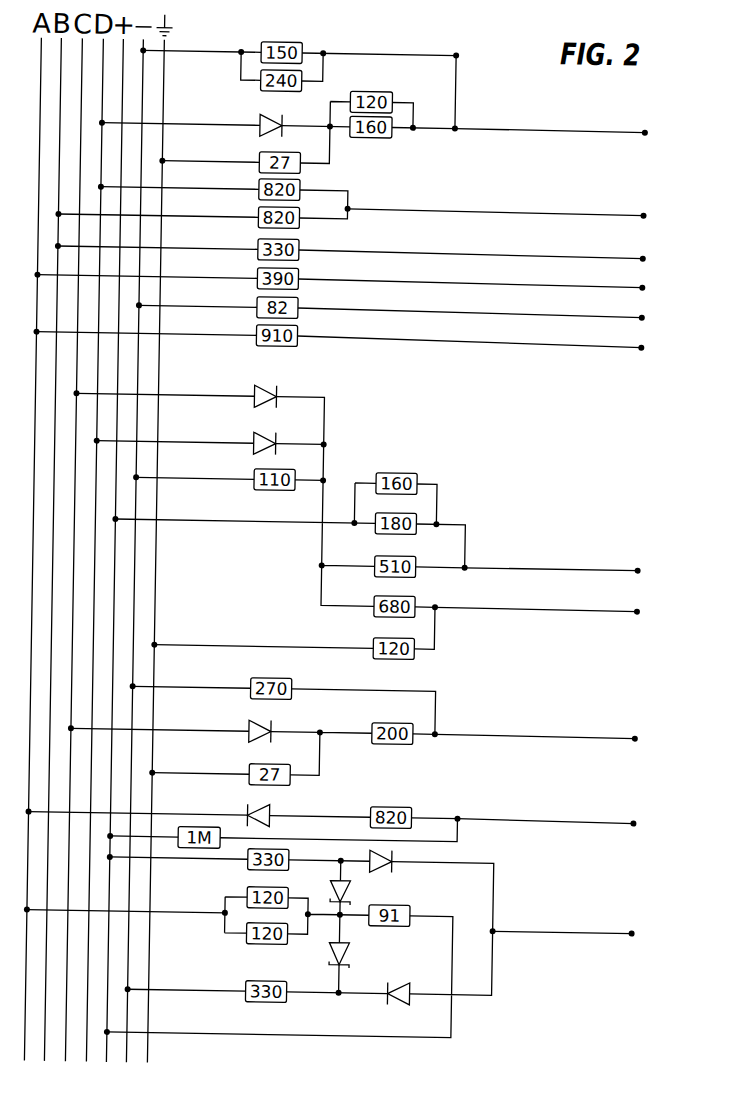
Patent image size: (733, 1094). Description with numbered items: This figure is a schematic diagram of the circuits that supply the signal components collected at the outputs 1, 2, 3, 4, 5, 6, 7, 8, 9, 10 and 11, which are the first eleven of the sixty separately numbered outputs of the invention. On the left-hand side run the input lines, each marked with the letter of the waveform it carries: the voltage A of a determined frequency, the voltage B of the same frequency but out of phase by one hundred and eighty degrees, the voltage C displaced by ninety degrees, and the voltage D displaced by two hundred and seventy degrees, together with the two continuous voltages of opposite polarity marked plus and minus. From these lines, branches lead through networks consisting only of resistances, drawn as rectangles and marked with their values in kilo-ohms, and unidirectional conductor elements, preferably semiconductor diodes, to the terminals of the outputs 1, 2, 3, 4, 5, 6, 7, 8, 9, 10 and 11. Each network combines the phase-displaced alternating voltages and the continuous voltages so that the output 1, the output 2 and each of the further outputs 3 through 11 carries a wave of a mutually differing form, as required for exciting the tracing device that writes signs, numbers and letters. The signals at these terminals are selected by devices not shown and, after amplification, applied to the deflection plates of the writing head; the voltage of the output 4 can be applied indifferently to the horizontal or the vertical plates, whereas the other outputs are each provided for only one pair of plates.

The output 1 is at (552, 118).
The output 2 is at (498, 200).
The output 3 is at (472, 242).
The output 4 is at (471, 271).
The output 5 is at (471, 301).
The output 6 is at (470, 331).
The output 7 is at (553, 556).
The output 8 is at (538, 596).
The output 9 is at (537, 723).
The output 10 is at (547, 809).
The output 11 is at (564, 918).